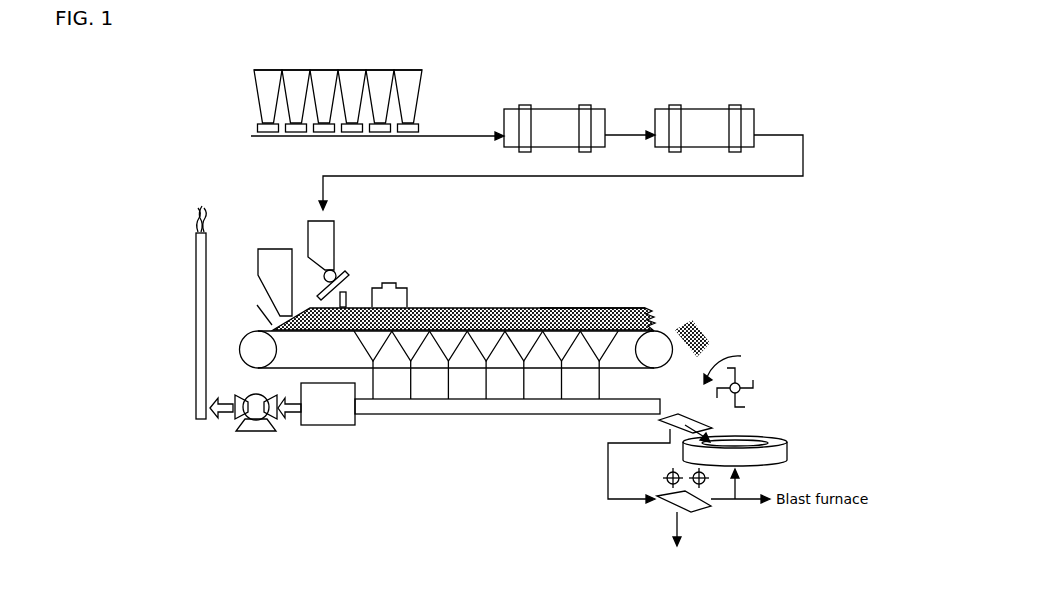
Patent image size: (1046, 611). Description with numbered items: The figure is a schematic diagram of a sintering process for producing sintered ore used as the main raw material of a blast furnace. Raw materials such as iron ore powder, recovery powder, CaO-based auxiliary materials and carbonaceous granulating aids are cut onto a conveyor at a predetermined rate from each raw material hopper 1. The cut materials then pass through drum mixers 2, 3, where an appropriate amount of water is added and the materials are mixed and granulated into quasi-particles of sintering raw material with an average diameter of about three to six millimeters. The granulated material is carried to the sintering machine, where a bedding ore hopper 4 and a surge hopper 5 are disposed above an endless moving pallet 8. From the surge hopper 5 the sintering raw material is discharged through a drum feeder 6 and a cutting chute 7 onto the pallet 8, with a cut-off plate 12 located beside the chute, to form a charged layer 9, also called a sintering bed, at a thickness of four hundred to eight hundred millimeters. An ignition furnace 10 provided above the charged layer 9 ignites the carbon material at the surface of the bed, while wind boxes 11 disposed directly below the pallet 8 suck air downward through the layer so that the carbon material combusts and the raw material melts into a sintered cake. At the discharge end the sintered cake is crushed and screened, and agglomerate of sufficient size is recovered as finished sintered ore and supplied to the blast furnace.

The raw material hopper 1 is at (412, 88).
The drum mixer 2 is at (554, 122).
The drum mixer 3 is at (704, 122).
The bedding ore hopper 4 is at (273, 250).
The surge hopper 5 is at (312, 222).
The drum feeder 6 is at (334, 270).
The cutting chute 7 is at (346, 286).
The pallet 8 is at (571, 307).
The charged layer 9 is at (507, 307).
The ignition furnace 10 is at (405, 292).
The wind box 11 is at (523, 339).
The cut-off plate 12 is at (347, 298).